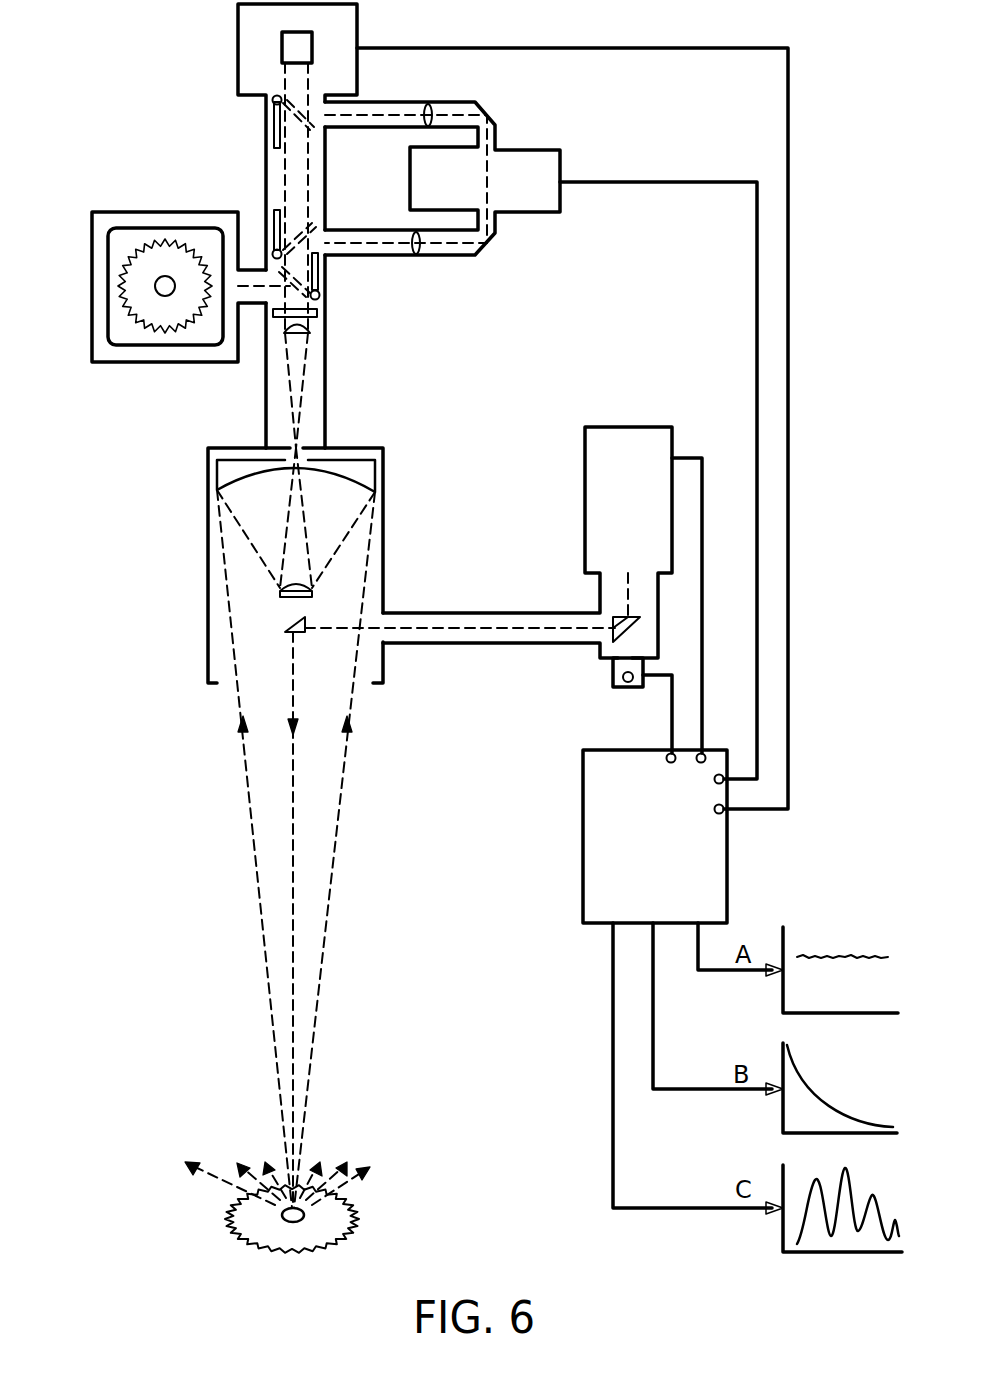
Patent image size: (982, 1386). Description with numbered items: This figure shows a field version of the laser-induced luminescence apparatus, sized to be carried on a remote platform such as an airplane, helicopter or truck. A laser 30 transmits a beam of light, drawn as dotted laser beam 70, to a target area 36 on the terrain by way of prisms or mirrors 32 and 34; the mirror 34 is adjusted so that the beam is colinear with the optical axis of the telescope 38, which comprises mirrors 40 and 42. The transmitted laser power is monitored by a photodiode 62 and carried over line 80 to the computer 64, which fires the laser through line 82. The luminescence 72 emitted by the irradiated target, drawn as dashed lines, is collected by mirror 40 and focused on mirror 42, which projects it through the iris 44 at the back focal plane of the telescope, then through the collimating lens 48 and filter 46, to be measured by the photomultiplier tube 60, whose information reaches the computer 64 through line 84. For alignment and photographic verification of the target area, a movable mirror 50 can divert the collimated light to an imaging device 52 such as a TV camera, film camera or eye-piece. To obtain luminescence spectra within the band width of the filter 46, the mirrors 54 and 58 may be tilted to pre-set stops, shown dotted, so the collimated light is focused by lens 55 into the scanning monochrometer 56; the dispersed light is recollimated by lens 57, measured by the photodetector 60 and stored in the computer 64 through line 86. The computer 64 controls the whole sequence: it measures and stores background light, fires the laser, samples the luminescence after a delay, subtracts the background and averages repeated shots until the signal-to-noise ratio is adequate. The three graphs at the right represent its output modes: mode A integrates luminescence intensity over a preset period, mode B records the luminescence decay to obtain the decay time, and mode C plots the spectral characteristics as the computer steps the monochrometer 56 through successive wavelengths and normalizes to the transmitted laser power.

The laser 30 is at (585, 500).
The prism or mirror 32 is at (628, 637).
The prism or mirror 34 is at (297, 632).
The target area 36 is at (305, 1215).
The telescope 38 is at (208, 554).
The mirror 40 is at (375, 470).
The mirror 42 is at (312, 593).
The iris 44 is at (313, 448).
The filter 46 is at (318, 313).
The collimating lens 48 is at (305, 330).
The movable mirror 50 is at (320, 280).
The imaging device 52 is at (185, 362).
The mirror 54 is at (272, 222).
The lens 55 is at (418, 252).
The scanning monochrometer 56 is at (540, 148).
The lens 57 is at (431, 106).
The mirror 58 is at (272, 130).
The photomultiplier tube 60 is at (312, 45).
The photodiode 62 is at (613, 678).
The computer 64 is at (683, 982).
The laser beam 70 is at (293, 850).
The luminescence 72 is at (339, 815).
The line 80 is at (672, 716).
The line 82 is at (702, 505).
The line 84 is at (788, 99).
The line 86 is at (757, 318).